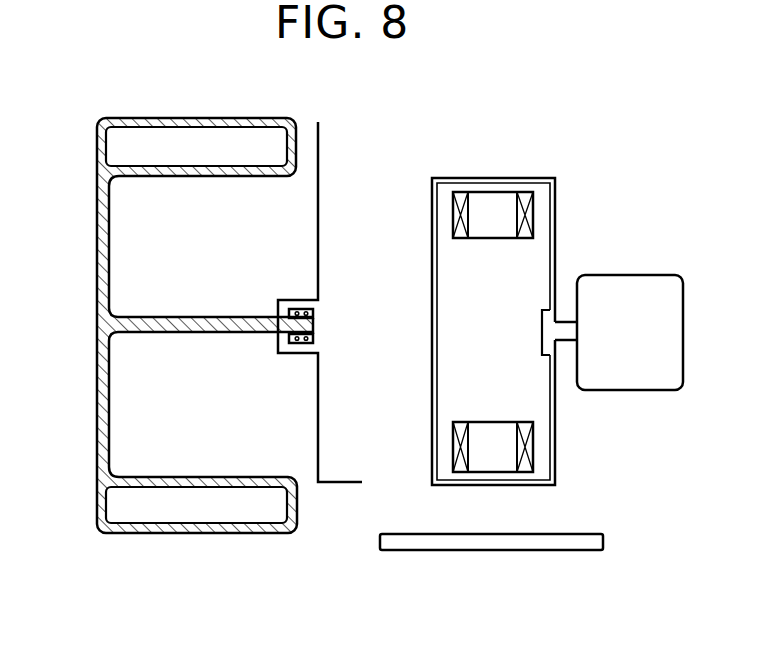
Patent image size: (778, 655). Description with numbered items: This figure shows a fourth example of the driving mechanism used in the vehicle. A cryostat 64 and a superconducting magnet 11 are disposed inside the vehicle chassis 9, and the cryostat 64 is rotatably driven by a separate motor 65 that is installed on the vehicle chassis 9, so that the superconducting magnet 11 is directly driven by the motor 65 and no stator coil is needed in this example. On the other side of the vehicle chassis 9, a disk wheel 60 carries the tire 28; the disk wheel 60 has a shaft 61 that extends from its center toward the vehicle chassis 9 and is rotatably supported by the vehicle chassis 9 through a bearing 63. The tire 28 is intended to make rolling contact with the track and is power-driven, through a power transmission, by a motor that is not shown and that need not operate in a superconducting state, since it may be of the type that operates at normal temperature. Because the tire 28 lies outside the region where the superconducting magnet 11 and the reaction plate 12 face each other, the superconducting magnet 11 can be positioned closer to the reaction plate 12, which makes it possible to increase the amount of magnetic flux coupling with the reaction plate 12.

The vehicle chassis 9 is at (383, 191).
The superconducting magnet 11 is at (533, 218).
The reaction plate 12 is at (509, 551).
The tire 28 is at (232, 119).
The disk wheel 60 is at (99, 272).
The shaft 61 is at (195, 333).
The bearing 63 is at (292, 345).
The cryostat 64 is at (501, 179).
The motor 65 is at (628, 275).